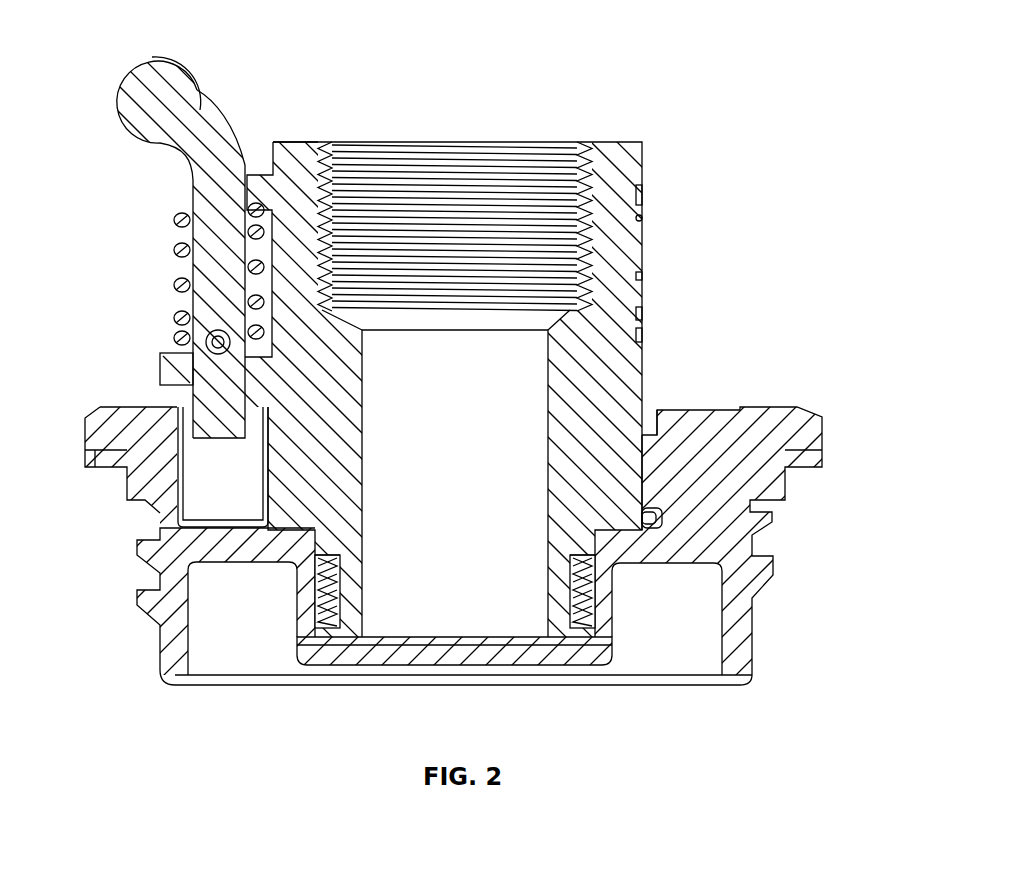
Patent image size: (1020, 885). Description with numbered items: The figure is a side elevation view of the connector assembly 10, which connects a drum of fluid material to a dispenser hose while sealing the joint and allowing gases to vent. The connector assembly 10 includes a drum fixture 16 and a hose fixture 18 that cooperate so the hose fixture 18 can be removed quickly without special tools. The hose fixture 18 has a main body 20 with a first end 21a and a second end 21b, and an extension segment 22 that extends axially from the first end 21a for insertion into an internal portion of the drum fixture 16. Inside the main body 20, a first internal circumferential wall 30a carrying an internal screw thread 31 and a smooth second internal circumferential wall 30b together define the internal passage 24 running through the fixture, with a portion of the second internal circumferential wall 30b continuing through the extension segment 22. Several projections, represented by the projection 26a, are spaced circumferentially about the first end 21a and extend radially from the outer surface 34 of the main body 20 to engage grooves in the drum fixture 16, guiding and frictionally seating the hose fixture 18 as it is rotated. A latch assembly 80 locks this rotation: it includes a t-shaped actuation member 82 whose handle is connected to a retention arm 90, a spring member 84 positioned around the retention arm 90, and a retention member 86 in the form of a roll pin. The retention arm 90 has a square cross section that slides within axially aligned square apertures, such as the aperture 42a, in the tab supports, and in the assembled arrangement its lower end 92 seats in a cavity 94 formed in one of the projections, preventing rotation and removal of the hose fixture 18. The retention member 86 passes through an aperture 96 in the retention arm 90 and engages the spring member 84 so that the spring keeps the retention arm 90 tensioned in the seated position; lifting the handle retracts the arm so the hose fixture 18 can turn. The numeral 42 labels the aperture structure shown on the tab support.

The connector assembly 10 is at (510, 442).
The drum fixture 16 is at (830, 437).
The hose fixture 18 is at (645, 348).
The main body 20 is at (650, 385).
The first end 21a is at (643, 480).
The second end 21b is at (305, 142).
The extension segment 22 is at (572, 633).
The internal passage 24 is at (477, 617).
The projection 26a is at (655, 522).
The first internal circumferential wall 30a is at (598, 205).
The second internal circumferential wall 30b is at (362, 613).
The internal screw thread 31 is at (583, 218).
The outer surface 34 is at (650, 292).
The platform 42 is at (150, 413).
The aperture 42a is at (510, 442).
The latch assembly 80 is at (152, 74).
The t-shaped actuation member 82 is at (162, 60).
The spring member 84 is at (180, 328).
The retention member 86 is at (190, 350).
The retention arm 90 is at (193, 267).
The lower end 92 is at (247, 427).
The cavity 94 is at (510, 442).
The aperture 96 is at (228, 345).